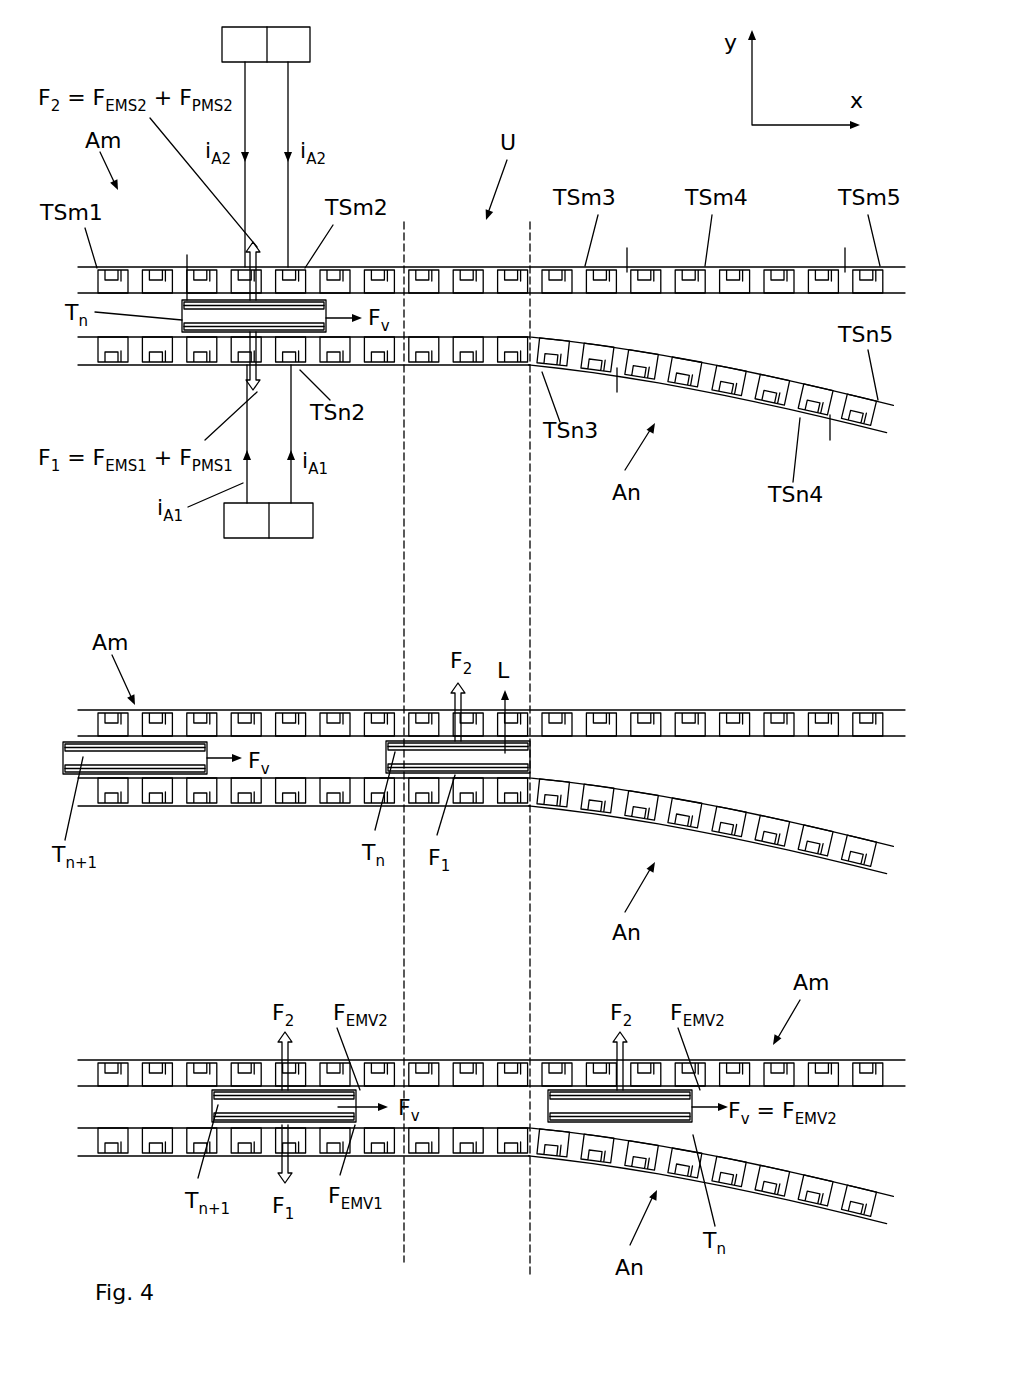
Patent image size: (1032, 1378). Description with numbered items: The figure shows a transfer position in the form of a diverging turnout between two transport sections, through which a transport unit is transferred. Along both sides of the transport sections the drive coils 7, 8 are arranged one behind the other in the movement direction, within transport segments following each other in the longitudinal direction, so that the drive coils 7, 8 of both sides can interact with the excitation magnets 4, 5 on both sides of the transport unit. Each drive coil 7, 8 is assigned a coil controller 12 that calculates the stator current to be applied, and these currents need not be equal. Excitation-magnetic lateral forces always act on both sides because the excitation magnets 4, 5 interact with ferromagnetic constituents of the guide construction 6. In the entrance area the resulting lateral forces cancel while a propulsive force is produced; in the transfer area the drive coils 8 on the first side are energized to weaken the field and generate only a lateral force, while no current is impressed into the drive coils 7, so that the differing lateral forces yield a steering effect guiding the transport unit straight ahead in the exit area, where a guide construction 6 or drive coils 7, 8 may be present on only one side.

The coil controller 12 is at (222, 43).
The drive coils 7 is at (160, 272).
The excitation magnets 4 is at (240, 298).
The excitation magnets 5 is at (235, 352).
The guide construction 6 is at (479, 593).
The drive coils 8 is at (768, 385).